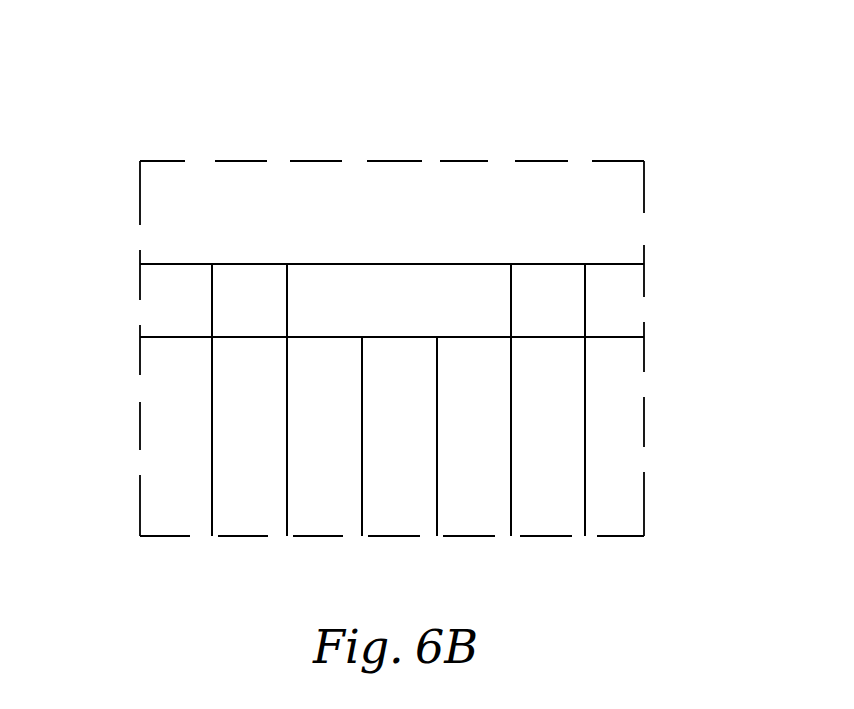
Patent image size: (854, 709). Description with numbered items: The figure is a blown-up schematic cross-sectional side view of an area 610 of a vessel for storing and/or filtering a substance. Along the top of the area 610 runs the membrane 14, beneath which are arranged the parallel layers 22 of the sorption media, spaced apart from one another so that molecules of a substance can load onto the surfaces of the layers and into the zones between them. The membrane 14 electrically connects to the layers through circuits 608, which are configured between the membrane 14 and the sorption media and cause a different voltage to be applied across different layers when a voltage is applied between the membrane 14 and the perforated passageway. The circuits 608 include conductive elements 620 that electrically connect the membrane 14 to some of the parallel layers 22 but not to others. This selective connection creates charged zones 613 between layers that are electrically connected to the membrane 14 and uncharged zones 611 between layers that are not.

The area of the vessel 610 is at (175, 80).
The membrane 14 is at (612, 262).
The uncharged zones 611 is at (407, 350).
The circuits 608 is at (260, 278).
The conductive elements 620 is at (212, 302).
The charged zones 613 is at (245, 437).
The parallel layers 22 is at (362, 453).